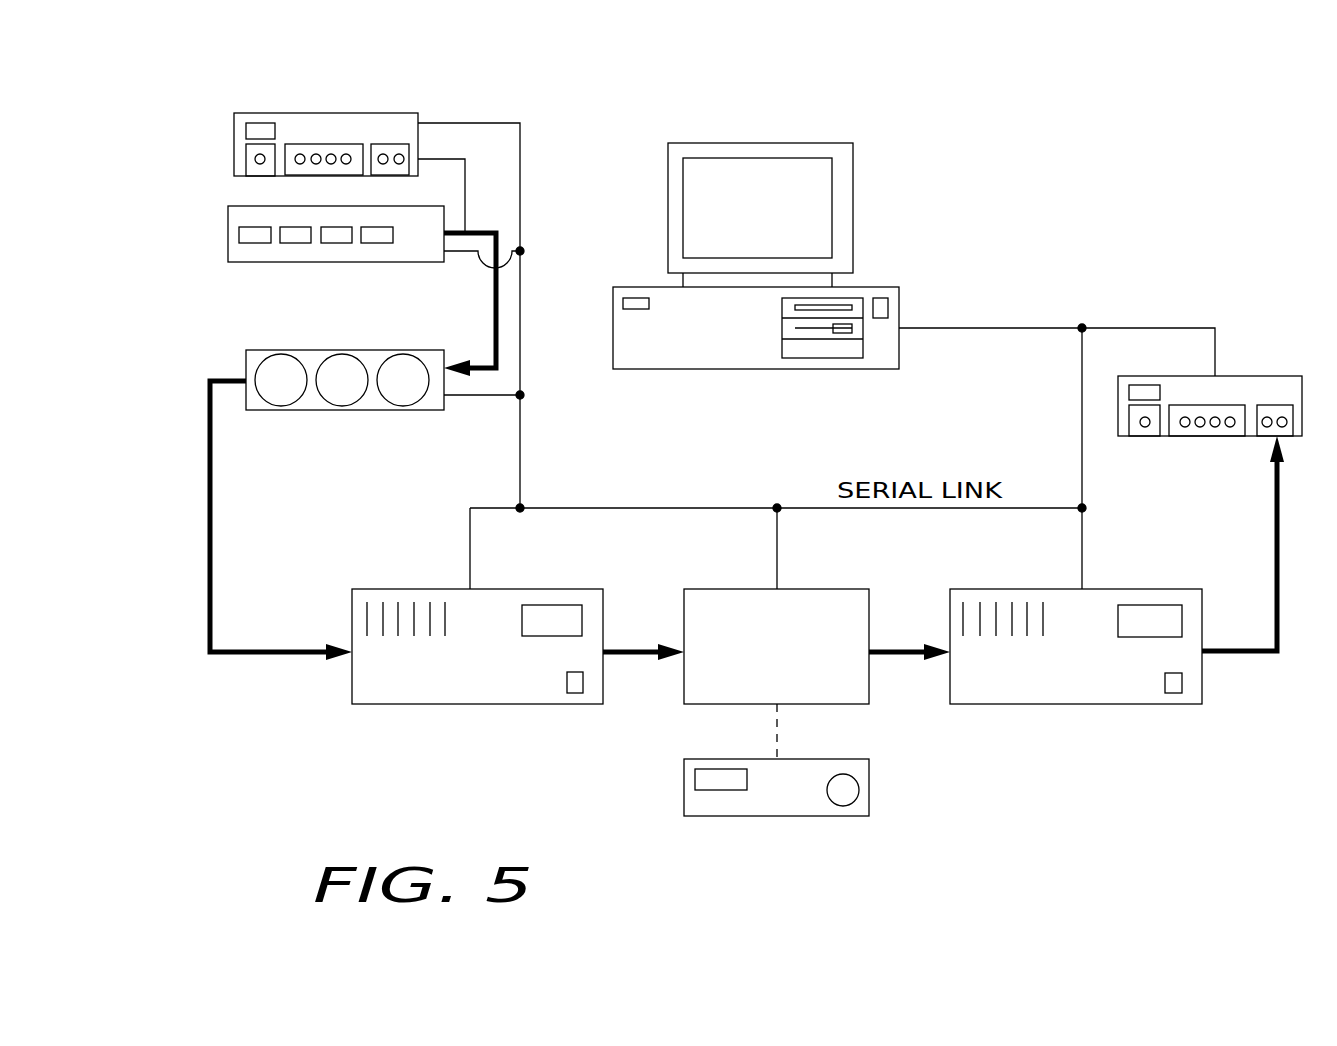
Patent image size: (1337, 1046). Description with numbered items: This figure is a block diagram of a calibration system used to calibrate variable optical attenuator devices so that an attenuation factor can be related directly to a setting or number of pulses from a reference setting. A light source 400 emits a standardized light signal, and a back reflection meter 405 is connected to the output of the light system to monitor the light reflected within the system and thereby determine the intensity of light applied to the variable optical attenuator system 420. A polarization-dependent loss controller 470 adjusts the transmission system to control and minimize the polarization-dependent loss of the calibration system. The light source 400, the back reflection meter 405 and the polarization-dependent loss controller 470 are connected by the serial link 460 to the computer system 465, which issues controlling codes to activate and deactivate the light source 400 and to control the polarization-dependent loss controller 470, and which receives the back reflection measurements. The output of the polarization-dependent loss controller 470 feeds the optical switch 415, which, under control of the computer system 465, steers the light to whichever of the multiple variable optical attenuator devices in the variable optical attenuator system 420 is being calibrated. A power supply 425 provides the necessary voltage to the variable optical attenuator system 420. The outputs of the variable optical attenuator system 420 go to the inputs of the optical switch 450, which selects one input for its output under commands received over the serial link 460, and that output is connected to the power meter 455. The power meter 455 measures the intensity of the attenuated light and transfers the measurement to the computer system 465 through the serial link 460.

The light source 400 is at (228, 225).
The back reflection meter 405 is at (234, 127).
The optical switch 415 is at (352, 687).
The variable optical attenuator system 420 is at (808, 589).
The power supply 425 is at (869, 789).
The optical switch 450 is at (1132, 589).
The power meter 455 is at (1245, 376).
The serial link 460 is at (945, 328).
The computer system 465 is at (750, 143).
The polarization-dependent loss controller 470 is at (246, 358).